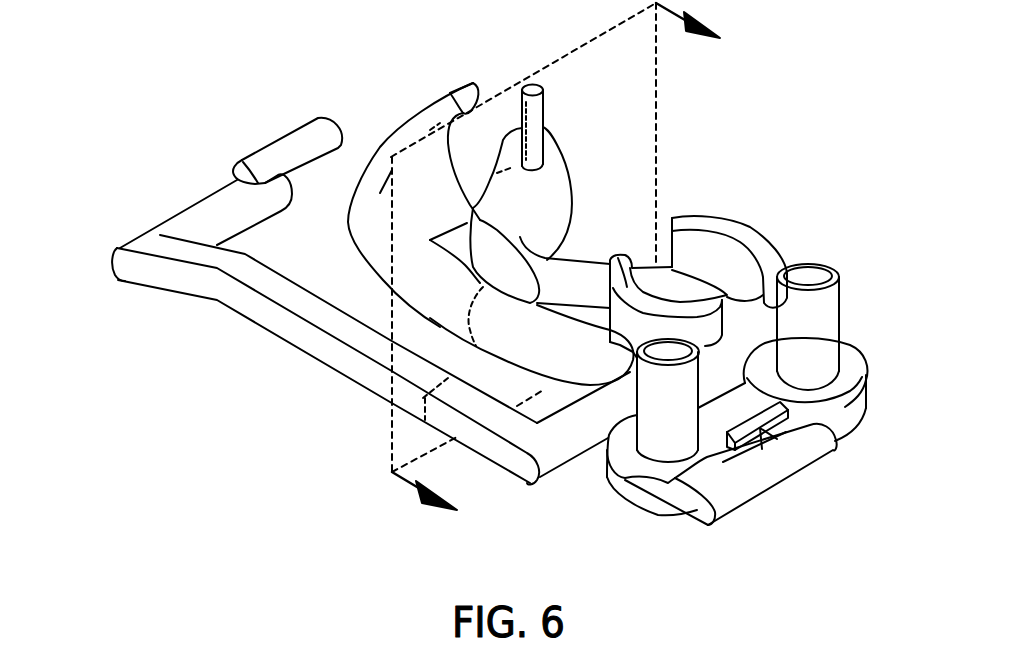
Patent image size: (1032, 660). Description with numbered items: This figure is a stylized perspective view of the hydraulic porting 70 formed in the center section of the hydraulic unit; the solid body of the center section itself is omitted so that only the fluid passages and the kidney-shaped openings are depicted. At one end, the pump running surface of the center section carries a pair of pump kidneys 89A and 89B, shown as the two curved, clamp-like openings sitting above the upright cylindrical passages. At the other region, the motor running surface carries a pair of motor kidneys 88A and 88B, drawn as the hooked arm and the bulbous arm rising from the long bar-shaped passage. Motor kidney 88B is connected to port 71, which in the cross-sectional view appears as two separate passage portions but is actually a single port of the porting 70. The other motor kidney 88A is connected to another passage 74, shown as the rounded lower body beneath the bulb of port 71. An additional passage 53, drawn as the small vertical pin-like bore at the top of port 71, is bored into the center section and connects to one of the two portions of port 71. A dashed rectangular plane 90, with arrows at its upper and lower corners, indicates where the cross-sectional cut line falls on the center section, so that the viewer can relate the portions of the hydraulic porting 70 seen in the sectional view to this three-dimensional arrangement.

The hydraulic porting 70 is at (170, 104).
The passage 53 is at (543, 113).
The port 71 is at (522, 212).
The passage 74 is at (507, 346).
The motor kidney 88A is at (467, 100).
The motor kidney 88B is at (573, 183).
The pump kidney 89A is at (617, 258).
The pump kidney 89B is at (757, 232).
The plane 90 is at (391, 430).